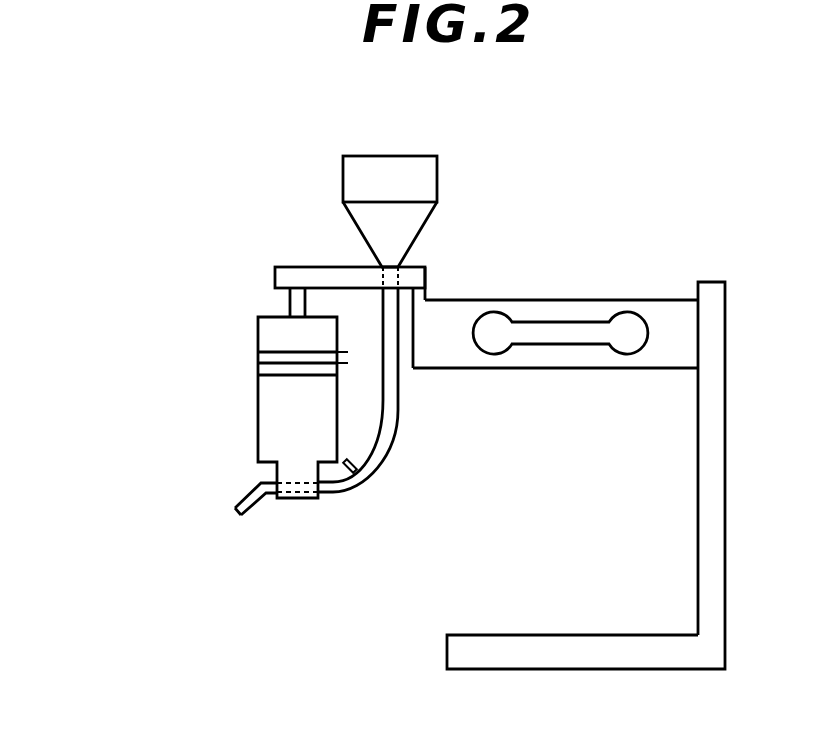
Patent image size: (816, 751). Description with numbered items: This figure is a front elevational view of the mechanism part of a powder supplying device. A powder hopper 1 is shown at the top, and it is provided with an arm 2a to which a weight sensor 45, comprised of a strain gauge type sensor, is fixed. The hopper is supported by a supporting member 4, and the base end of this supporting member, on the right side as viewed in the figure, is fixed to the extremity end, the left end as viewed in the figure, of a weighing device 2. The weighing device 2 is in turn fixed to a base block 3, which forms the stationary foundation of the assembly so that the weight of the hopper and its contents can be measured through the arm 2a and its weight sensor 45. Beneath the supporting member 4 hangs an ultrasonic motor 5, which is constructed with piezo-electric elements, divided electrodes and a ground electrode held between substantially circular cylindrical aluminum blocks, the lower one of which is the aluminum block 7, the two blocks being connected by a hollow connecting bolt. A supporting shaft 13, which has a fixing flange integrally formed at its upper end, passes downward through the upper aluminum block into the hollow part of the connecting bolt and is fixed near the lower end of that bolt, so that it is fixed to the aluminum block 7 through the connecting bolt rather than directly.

The powder hopper 1 is at (438, 177).
The weighing device 2 is at (621, 289).
The arm 2a is at (538, 305).
The base block 3 is at (563, 640).
The supporting member 4 is at (312, 267).
The ultrasonic motor 5 is at (242, 351).
The aluminum block 7 is at (258, 397).
The supporting shaft 13 is at (295, 302).
The weight sensor 45 is at (582, 358).